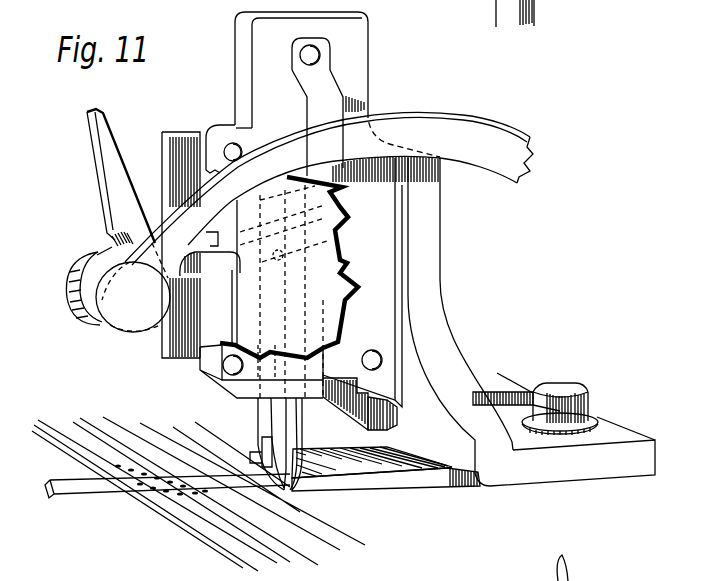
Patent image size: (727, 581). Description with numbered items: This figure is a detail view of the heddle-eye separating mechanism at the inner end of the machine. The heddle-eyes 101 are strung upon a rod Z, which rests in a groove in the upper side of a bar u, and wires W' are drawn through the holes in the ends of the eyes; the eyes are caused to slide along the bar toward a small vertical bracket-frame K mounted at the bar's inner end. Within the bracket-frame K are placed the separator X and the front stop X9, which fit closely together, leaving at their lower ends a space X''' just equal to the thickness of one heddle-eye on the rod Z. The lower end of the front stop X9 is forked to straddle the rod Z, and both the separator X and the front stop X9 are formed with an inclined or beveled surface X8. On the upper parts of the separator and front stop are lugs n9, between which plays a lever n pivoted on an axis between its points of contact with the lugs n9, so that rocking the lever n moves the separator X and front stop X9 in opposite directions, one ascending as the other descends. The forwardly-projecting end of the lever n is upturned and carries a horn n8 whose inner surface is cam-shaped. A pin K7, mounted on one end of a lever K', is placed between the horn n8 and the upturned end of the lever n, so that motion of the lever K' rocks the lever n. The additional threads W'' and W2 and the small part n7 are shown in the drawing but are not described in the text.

The vertical bracket-frame K is at (323, 94).
The lever K' is at (329, 188).
The pin K7 is at (118, 262).
The lever n is at (201, 245).
The pawl n7 is at (210, 239).
The horn n8 is at (121, 179).
The lugs or projections n9 is at (289, 287).
The separator X is at (292, 444).
The space X''' is at (308, 444).
The inclined or beveled surface X8 is at (256, 446).
The front stop X9 is at (258, 422).
The wires W' is at (154, 495).
The threads W'' is at (206, 491).
The threads W2 is at (265, 496).
The rod Z is at (63, 478).
The heddle-eyes 101 is at (360, 467).
The bar u is at (420, 483).